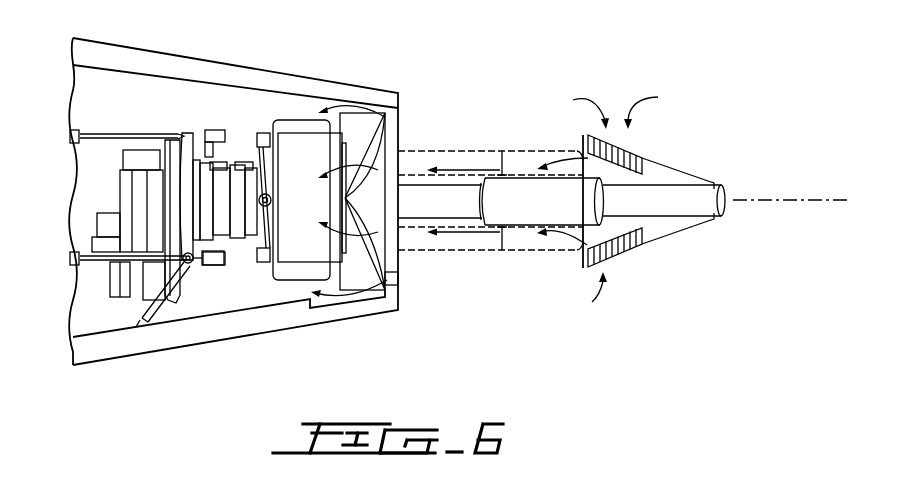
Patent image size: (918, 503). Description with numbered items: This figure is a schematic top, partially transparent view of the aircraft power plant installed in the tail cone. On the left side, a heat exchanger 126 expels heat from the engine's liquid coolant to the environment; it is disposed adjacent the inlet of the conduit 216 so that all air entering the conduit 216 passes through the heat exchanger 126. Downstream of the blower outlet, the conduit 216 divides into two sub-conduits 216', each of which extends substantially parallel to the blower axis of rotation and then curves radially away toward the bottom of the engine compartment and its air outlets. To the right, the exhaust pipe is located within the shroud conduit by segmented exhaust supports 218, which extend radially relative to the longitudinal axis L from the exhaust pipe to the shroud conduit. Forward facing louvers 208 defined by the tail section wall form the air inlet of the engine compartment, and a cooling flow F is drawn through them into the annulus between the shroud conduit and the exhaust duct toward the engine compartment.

The heat exchanger 126 is at (328, 214).
The louvers 208 is at (583, 125).
The conduit 216 is at (239, 210).
The sub-conduits 216' is at (408, 171).
The segmented exhaust supports 218 is at (500, 262).
The cooling flow F is at (632, 281).
The longitudinal axis L is at (779, 200).